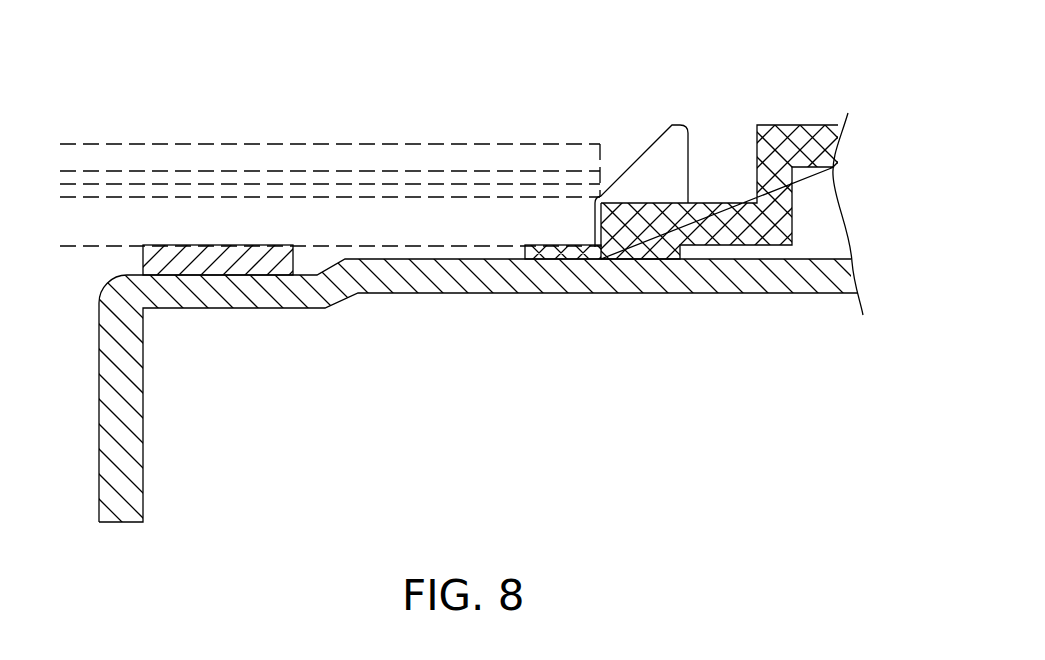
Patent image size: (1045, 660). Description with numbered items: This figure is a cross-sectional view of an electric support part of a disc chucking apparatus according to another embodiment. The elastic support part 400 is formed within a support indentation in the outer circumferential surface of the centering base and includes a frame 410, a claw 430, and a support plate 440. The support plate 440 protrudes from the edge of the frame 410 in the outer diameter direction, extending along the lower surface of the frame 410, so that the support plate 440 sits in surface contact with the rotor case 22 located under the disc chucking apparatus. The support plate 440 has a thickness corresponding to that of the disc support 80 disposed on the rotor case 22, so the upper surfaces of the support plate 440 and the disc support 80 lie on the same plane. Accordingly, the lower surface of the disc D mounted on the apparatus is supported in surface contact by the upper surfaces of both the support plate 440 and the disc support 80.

The disc D is at (329, 145).
The rotor case 22 is at (477, 272).
The disc support 80 is at (223, 260).
The elastic support part 400 is at (717, 213).
The frame 410 is at (737, 225).
The claw 430 is at (650, 165).
The support plate 440 is at (558, 255).